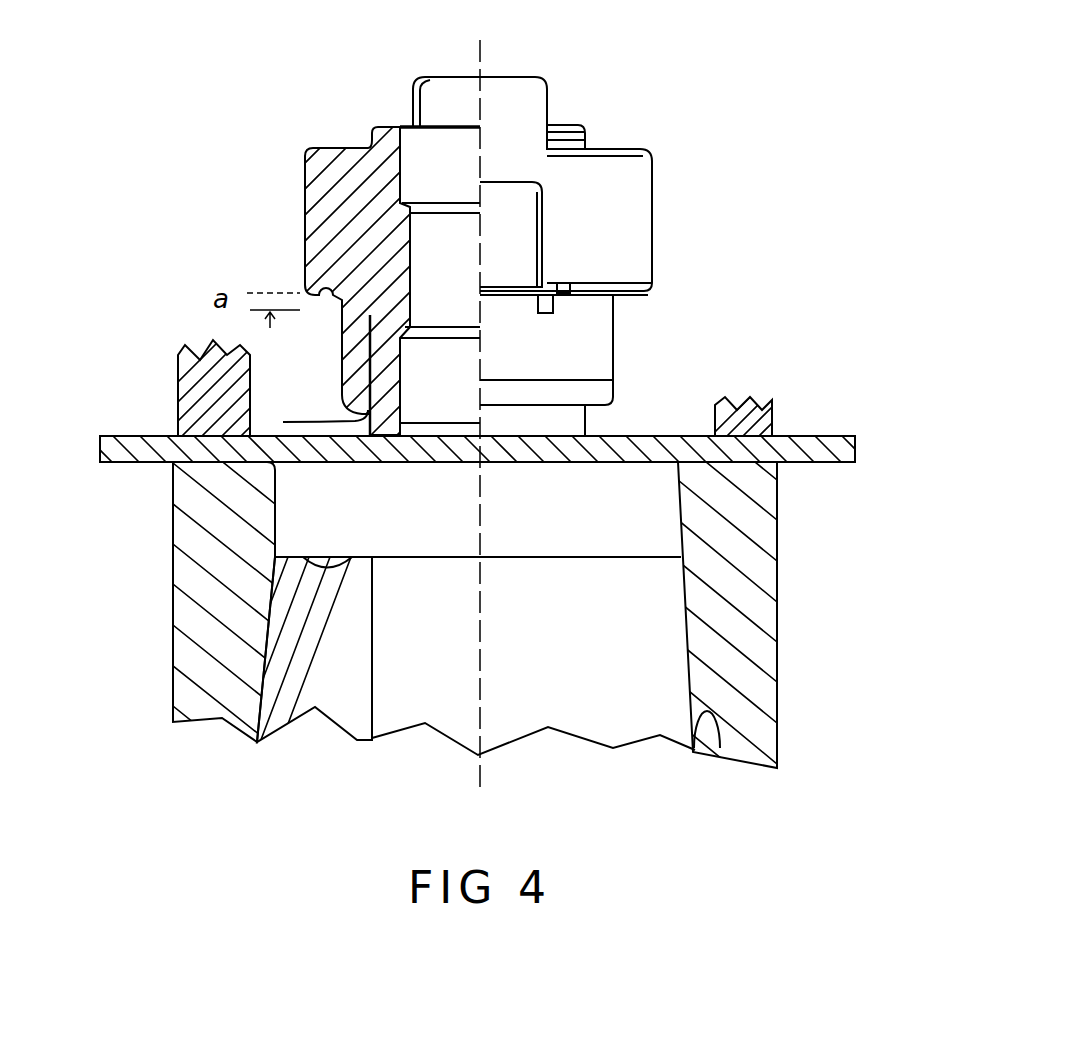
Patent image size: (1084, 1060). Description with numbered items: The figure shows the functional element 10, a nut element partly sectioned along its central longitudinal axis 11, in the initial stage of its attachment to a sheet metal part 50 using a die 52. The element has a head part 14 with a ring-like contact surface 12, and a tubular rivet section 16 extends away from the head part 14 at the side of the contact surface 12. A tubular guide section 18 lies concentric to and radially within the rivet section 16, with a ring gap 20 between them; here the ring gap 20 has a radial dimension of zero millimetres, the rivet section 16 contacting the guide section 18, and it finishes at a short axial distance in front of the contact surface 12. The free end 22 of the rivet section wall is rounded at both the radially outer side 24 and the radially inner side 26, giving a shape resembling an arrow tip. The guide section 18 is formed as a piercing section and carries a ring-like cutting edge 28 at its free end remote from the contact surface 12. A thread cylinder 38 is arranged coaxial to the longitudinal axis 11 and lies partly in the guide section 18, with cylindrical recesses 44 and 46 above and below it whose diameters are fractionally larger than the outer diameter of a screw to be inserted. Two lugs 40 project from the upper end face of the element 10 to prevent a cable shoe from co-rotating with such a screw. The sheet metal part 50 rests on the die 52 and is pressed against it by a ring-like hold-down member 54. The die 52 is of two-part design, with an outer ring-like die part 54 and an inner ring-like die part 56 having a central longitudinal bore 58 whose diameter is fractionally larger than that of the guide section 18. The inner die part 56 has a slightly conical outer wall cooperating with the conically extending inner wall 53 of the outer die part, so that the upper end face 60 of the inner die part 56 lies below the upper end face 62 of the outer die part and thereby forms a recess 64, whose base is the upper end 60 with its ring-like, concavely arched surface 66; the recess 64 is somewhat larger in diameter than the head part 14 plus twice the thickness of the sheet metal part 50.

The functional element 10 is at (670, 214).
The central longitudinal axis 11 is at (483, 66).
The ring-like contact surface 12 is at (312, 294).
The head part 14 is at (303, 233).
The tubular rivet section 16 is at (613, 348).
The tubular guide section 18 is at (590, 422).
The ring gap 20 is at (341, 370).
The free end 22 is at (600, 410).
The radially outer side 24 is at (345, 405).
The radially inner side 26 is at (310, 421).
The ring-like cutting edge 28 is at (395, 417).
The thread cylinder 38 is at (412, 262).
The lugs 40 is at (552, 102).
The cylindrical recess 44 is at (410, 165).
The cylindrical recess 46 is at (402, 365).
The sheet metal part 50 is at (833, 463).
The die 52 is at (795, 630).
The conically extending inner wall 53 is at (715, 745).
The hold-down member 54 is at (178, 405).
The inner die part 56 is at (372, 690).
The central longitudinal bore 58 is at (372, 605).
The upper end face 60 is at (360, 557).
The upper end face 62 is at (777, 525).
The recess 64 is at (645, 513).
The concavely arched surface 66 is at (327, 566).